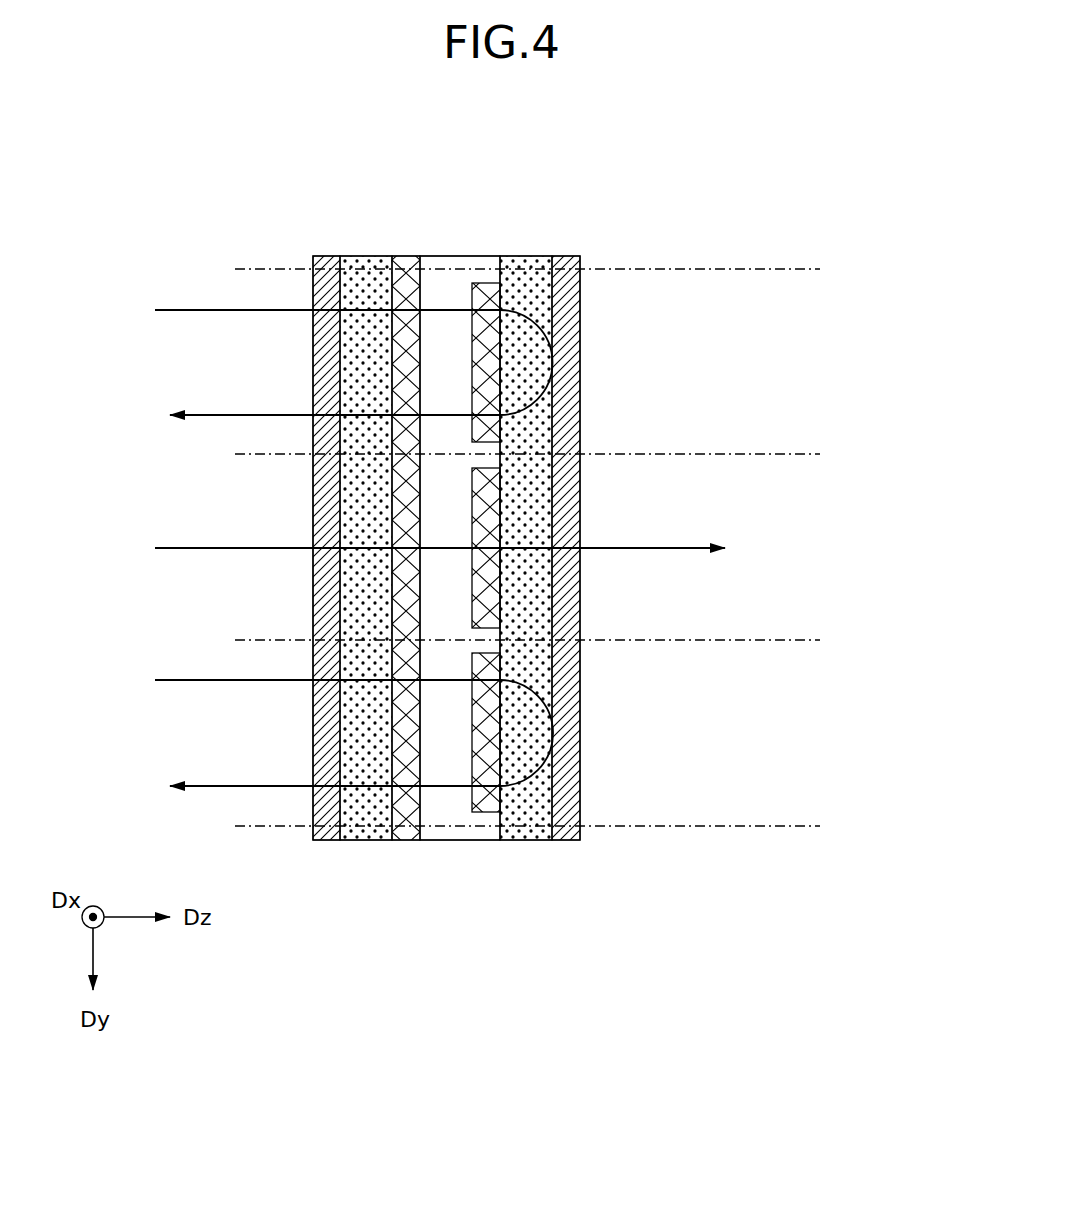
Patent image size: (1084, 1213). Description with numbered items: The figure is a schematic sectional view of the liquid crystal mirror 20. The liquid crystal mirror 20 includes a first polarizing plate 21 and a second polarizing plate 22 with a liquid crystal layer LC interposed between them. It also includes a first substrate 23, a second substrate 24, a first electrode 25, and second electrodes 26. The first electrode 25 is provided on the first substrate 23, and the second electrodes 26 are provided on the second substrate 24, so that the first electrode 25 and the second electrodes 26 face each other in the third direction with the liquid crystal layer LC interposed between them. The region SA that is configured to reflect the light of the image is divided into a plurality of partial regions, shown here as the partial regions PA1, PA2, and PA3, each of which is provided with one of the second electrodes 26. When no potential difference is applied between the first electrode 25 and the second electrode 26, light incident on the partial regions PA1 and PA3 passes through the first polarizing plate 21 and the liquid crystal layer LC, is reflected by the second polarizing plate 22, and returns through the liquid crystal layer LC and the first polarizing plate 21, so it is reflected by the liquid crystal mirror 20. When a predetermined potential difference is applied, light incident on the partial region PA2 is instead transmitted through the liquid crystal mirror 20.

The liquid crystal mirror 20 is at (622, 172).
The first polarizing plate 21 is at (323, 256).
The second polarizing plate 22 is at (561, 256).
The first substrate 23 is at (364, 256).
The second substrate 24 is at (521, 256).
The first electrode 25 is at (404, 256).
The second electrodes 26 is at (486, 283).
The liquid crystal layer LC is at (443, 256).
The partial region PA1 is at (820, 269).
The partial region PA2 is at (820, 454).
The partial region PA3 is at (820, 640).
The region SA is at (895, 338).